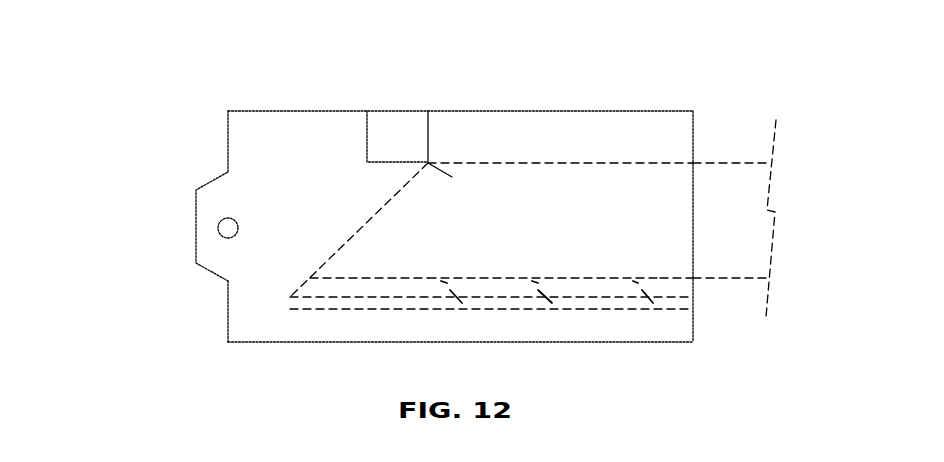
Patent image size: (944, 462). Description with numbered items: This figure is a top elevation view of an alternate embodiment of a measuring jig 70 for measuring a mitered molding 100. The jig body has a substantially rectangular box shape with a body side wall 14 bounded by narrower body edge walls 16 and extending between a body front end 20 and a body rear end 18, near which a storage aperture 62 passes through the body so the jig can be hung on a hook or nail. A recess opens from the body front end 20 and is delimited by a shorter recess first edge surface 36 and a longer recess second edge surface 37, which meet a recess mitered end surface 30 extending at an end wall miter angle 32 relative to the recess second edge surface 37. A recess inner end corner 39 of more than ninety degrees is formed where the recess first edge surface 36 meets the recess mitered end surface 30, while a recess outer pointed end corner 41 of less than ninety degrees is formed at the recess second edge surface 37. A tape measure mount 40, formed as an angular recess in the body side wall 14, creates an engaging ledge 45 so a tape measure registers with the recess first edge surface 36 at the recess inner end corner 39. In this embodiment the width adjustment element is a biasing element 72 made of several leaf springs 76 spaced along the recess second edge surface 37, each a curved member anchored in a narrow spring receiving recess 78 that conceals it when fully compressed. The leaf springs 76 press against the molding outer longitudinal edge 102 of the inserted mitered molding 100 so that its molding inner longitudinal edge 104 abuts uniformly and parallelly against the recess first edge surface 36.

The measuring jig 70 is at (158, 127).
The body side wall 14 is at (277, 160).
The body edge wall 16 is at (280, 110).
The body rear end 18 is at (197, 232).
The body front end 20 is at (695, 128).
The storage aperture 62 is at (237, 230).
The tape measure mount 40 is at (387, 127).
The engaging ledge 45 is at (428, 130).
The recess inner end corner 39 is at (473, 183).
The recess mitered end surface 30 is at (370, 218).
The end wall miter angle 32 is at (360, 278).
The biasing element 72 is at (508, 278).
The spring receiving recess 78 is at (693, 270).
The recess outer pointed end corner 41 is at (288, 298).
The recess second edge surface 37 is at (367, 297).
The leaf spring 76 is at (445, 277).
The recess first edge surface 36 is at (625, 163).
The molding inner longitudinal edge 104 is at (718, 160).
The mitered molding 100 is at (737, 163).
The molding outer longitudinal edge 102 is at (723, 278).